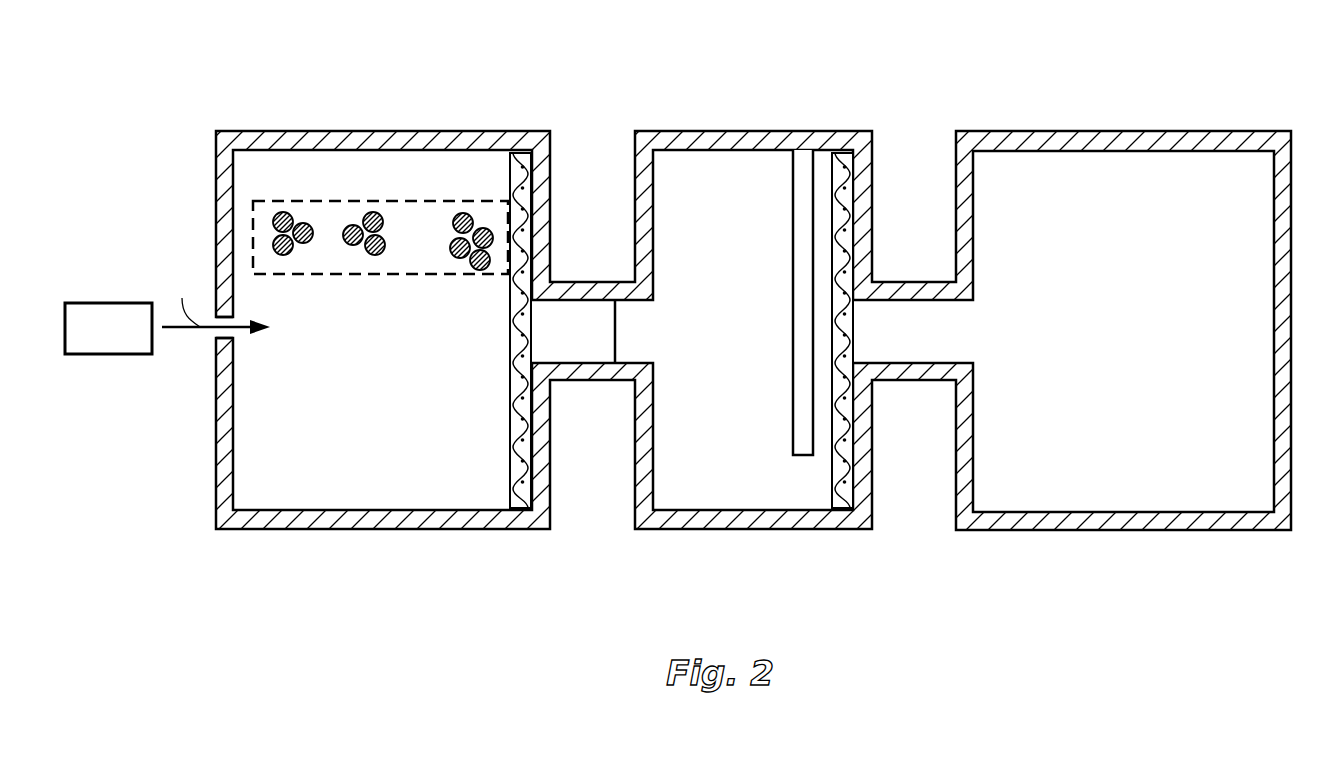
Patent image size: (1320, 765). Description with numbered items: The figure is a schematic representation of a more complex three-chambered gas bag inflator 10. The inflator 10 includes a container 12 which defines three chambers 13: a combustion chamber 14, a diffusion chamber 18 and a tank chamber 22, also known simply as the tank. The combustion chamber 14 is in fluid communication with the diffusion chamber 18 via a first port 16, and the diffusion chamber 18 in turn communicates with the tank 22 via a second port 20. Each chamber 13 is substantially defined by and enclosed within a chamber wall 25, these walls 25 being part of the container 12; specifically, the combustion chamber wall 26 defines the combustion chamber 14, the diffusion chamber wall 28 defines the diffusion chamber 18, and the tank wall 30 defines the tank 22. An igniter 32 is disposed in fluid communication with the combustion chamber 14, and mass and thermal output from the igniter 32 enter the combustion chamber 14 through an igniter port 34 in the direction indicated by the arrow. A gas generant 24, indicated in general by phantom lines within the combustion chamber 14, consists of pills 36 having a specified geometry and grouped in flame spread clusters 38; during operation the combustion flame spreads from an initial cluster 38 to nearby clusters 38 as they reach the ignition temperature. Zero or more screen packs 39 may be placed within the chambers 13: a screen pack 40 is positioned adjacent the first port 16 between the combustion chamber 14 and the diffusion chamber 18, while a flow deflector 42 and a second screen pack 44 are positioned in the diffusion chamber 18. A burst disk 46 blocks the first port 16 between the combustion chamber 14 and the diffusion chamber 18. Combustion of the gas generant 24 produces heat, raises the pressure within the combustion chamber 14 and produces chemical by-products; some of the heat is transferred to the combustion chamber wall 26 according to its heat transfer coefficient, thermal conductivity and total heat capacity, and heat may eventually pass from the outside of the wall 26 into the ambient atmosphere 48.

The gas bag inflator 10 is at (188, 135).
The container 12 is at (405, 520).
The chambers 13 is at (350, 400).
The combustion chamber 14 is at (255, 495).
The first port 16 is at (580, 340).
The diffusion chamber 18 is at (670, 501).
The second port 20 is at (908, 333).
The tank chamber 22 is at (1005, 492).
The gas generant 24 is at (303, 275).
The chamber wall 25 is at (365, 140).
The combustion chamber wall 26 is at (425, 140).
The diffusion chamber wall 28 is at (750, 140).
The tank wall 30 is at (1160, 140).
The igniter 32 is at (115, 356).
The igniter port 34 is at (215, 338).
The pills 36 is at (293, 215).
The flame spread clusters 38 is at (383, 258).
The screen packs 39 is at (515, 403).
The screen pack 40 is at (515, 457).
The flow deflector 42 is at (797, 397).
The second screen pack 44 is at (835, 487).
The burst disk 46 is at (617, 345).
The ambient atmosphere 48 is at (897, 97).